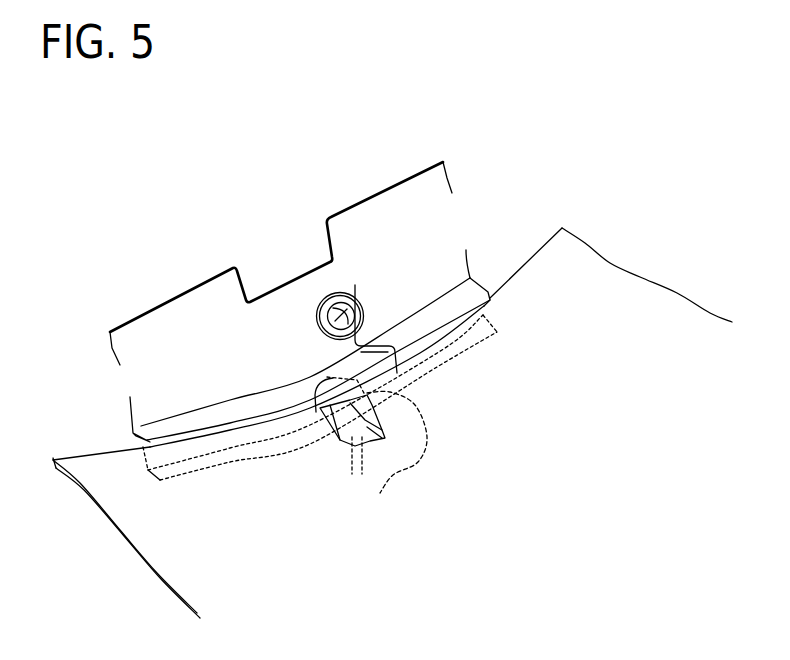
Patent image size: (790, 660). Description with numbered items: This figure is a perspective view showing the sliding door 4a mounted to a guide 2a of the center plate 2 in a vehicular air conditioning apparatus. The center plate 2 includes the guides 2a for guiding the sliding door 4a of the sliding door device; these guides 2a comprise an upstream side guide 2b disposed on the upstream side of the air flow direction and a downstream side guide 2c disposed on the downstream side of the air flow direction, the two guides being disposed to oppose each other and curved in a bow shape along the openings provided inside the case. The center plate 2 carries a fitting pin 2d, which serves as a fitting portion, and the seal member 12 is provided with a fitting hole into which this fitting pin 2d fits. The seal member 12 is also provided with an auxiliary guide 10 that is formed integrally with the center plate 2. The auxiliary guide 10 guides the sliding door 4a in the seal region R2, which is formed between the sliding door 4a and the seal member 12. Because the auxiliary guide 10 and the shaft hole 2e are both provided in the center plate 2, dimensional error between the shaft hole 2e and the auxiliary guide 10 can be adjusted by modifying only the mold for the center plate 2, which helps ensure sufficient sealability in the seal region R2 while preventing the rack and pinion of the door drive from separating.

The center plate 2 is at (405, 207).
The guides 2a is at (319, 365).
The upstream side guide 2b is at (440, 322).
The downstream side guide 2c is at (207, 462).
The fitting pin 2d is at (360, 440).
The shaft hole 2e is at (355, 285).
The seal region R2 is at (318, 322).
The auxiliary guide 10 is at (368, 395).
The seal member 12 is at (402, 435).
The sliding door 4a is at (193, 568).